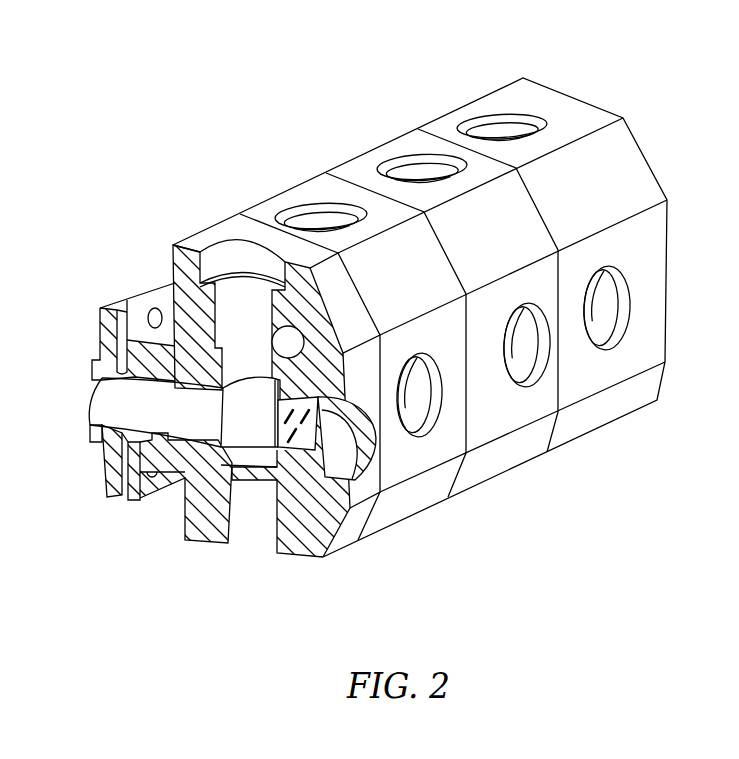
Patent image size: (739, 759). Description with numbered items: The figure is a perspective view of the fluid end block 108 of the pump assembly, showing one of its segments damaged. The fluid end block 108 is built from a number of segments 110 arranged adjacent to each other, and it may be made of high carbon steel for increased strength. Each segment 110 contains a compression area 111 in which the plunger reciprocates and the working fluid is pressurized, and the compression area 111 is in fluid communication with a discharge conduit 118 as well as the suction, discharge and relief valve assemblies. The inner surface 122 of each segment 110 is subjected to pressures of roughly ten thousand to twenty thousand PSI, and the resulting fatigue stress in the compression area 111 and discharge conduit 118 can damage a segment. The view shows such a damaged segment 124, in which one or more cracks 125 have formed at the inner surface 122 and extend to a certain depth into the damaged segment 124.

The fluid end block 108 is at (622, 69).
The segment 110 is at (518, 422).
The compression area 111 is at (248, 412).
The discharge conduit 118 is at (285, 345).
The inner surface 122 is at (296, 452).
The damaged segment 124 is at (235, 226).
The crack 125 is at (353, 463).